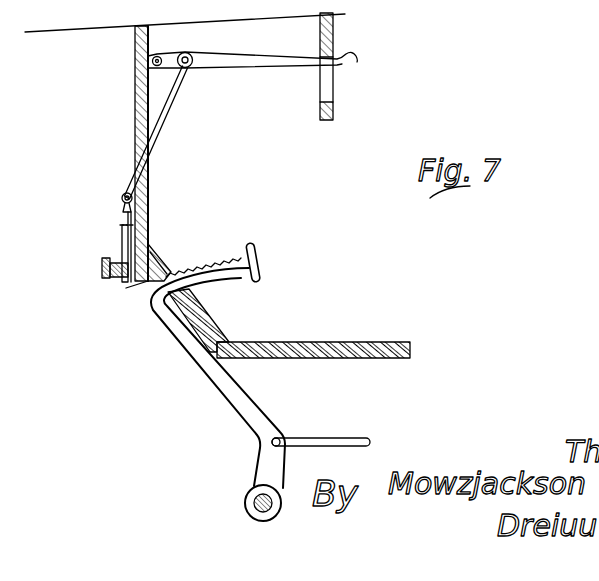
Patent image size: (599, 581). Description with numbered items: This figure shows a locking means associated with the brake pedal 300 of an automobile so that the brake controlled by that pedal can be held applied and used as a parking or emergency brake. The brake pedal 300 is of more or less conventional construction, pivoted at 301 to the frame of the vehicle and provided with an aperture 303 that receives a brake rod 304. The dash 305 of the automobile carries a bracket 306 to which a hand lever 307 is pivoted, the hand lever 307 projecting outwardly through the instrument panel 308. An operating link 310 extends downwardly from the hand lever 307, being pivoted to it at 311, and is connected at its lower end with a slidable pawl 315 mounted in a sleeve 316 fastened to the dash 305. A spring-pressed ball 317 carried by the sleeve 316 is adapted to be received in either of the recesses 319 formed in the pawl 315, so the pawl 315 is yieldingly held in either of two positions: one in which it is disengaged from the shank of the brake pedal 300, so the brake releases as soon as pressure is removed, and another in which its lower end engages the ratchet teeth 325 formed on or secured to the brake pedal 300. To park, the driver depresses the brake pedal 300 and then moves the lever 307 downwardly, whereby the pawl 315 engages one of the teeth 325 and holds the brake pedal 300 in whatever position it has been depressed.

The brake pedal 300 is at (239, 262).
The pivot 301 is at (245, 497).
The aperture 303 is at (305, 400).
The brake rod 304 is at (300, 403).
The dash 305 is at (135, 110).
The bracket 306 is at (135, 83).
The hand lever 307 is at (250, 66).
The instrument panel 308 is at (322, 107).
The operating link 310 is at (167, 100).
The pivot 311 is at (189, 68).
The slidable pawl 315 is at (148, 220).
The sleeve 316 is at (120, 236).
The spring-pressed ball 317 is at (112, 278).
The recesses 319 is at (150, 242).
The ratchet teeth 325 is at (185, 268).